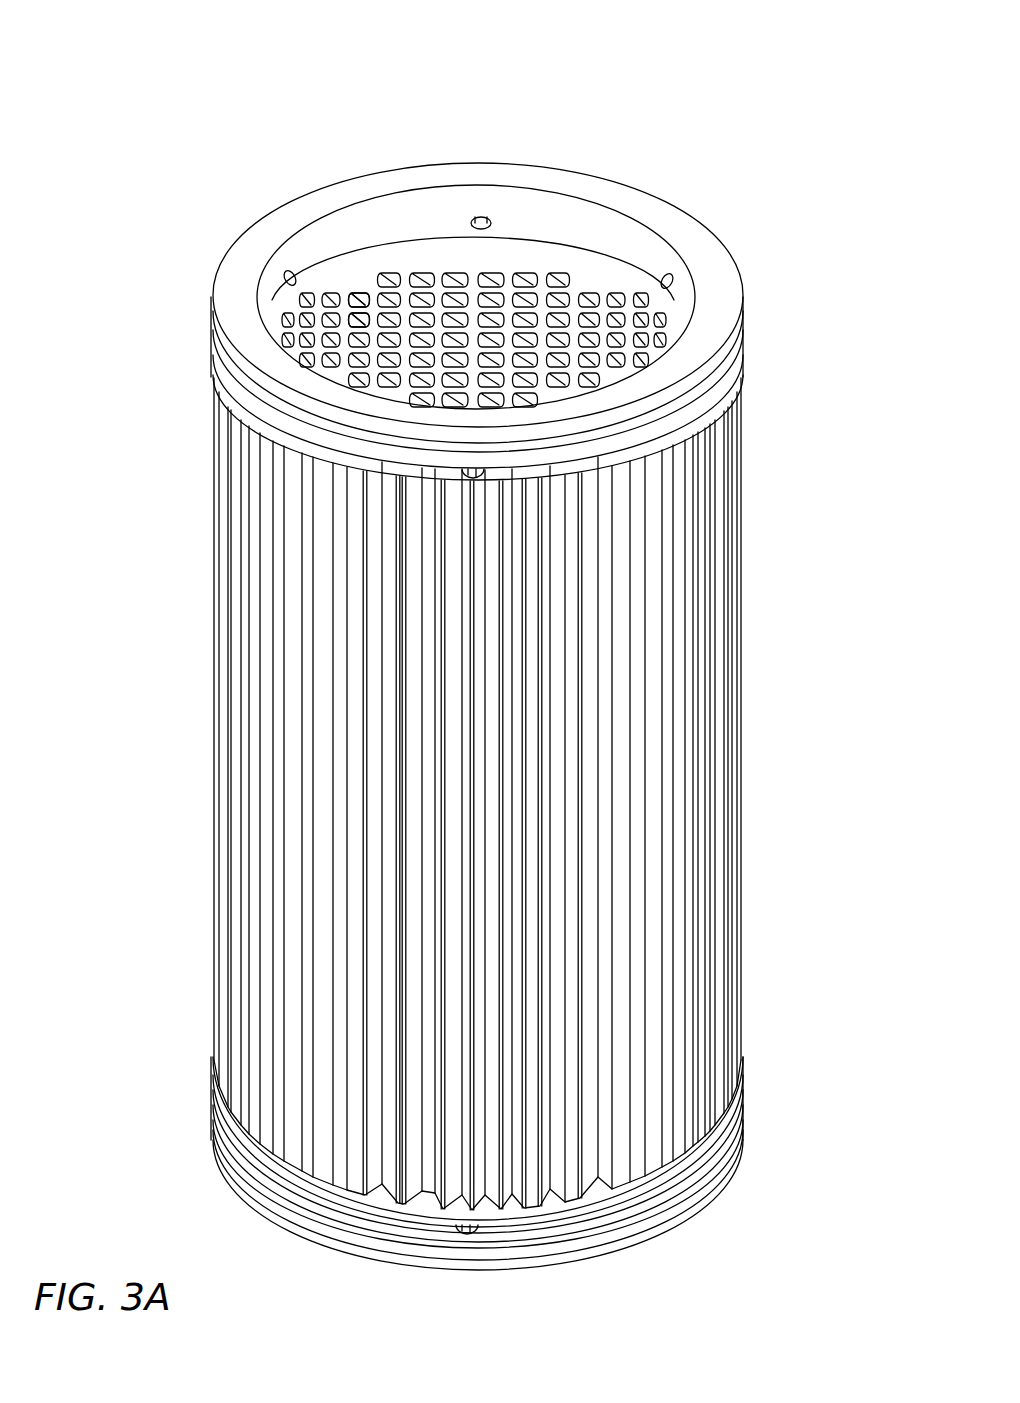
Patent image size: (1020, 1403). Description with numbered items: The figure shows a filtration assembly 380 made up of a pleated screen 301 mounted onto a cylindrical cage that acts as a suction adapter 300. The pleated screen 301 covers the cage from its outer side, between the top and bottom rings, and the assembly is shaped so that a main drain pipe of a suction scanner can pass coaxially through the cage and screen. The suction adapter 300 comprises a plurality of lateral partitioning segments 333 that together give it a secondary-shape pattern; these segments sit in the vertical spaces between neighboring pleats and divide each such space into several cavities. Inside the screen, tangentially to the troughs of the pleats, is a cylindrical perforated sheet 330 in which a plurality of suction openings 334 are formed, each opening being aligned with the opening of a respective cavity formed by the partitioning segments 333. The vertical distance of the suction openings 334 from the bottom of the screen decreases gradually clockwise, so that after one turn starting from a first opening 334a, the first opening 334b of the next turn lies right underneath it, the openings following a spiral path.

The filtration assembly 380 is at (196, 158).
The suction adapter 300 is at (624, 278).
The pleated screen 301 is at (738, 560).
The cylindrical perforated sheet 330 is at (299, 310).
The lateral partitioning segments 333 is at (520, 362).
The suction openings 334 is at (375, 342).
The first opening 334a is at (362, 290).
The first opening of a next turn 334b is at (362, 298).